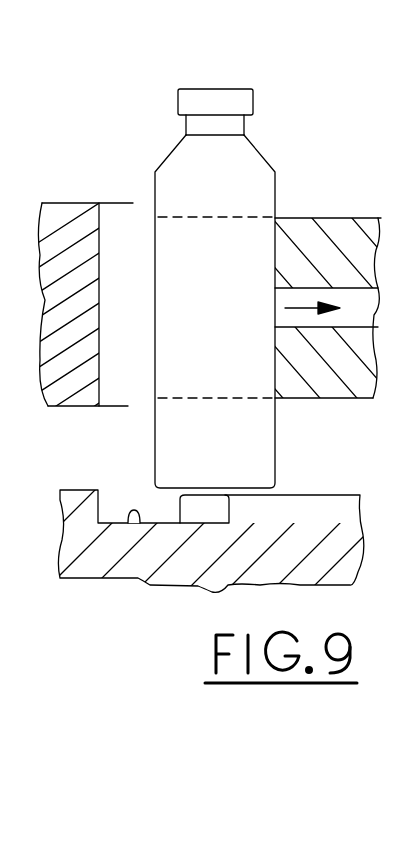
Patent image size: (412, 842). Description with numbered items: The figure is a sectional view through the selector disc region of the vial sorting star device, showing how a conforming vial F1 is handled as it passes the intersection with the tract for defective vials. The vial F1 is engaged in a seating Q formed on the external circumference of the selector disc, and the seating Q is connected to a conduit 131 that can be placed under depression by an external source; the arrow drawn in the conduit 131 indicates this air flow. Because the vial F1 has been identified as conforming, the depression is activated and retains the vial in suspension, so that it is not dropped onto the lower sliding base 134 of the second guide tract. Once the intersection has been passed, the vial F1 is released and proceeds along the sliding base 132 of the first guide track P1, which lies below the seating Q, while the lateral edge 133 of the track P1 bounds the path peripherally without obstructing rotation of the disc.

The first guide track P1 is at (289, 430).
The conforming vial F1 is at (218, 148).
The seating Q is at (272, 231).
The conduit 131 is at (353, 310).
The sliding base 132 is at (313, 494).
The lateral edge 133 is at (72, 220).
The sliding base 134 is at (134, 520).